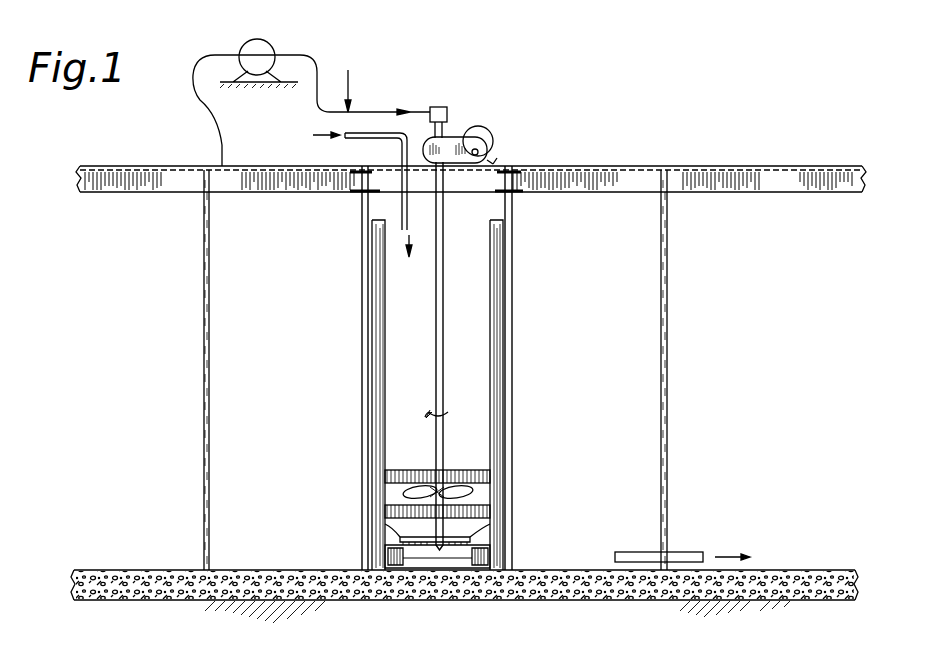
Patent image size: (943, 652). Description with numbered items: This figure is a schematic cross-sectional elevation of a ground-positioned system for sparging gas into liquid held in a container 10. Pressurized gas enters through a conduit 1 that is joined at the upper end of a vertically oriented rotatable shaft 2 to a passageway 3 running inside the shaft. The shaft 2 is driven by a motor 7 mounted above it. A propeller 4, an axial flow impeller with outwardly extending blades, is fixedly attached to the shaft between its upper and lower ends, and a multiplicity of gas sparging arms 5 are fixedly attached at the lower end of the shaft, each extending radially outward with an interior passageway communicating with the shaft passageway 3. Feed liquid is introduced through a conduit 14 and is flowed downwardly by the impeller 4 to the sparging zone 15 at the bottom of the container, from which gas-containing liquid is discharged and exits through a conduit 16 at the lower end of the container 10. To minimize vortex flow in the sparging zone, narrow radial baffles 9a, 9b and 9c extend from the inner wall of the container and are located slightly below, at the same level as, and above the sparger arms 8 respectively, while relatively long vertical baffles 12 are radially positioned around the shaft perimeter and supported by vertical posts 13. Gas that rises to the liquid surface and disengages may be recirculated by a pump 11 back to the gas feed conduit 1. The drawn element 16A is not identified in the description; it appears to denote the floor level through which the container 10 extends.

The conduit 1 is at (420, 108).
The rotatable shaft 2 is at (445, 290).
The passageway 3 is at (444, 346).
The propeller 4 is at (475, 492).
The gas sparging arms 5 is at (470, 536).
The motor 7 is at (503, 158).
The sparger arms 8 is at (383, 525).
The narrow radial baffle 9a is at (385, 549).
The narrow radial baffle 9b is at (385, 510).
The narrow radial baffle 9c is at (390, 475).
The container 10 is at (668, 330).
The pump 11 is at (262, 50).
The long vertical baffles 12 is at (493, 285).
The vertical posts 13 is at (507, 381).
The conduit 14 is at (345, 137).
The sparging zone 15 is at (465, 552).
The conduit 16 is at (686, 552).
The floor 16A is at (605, 166).